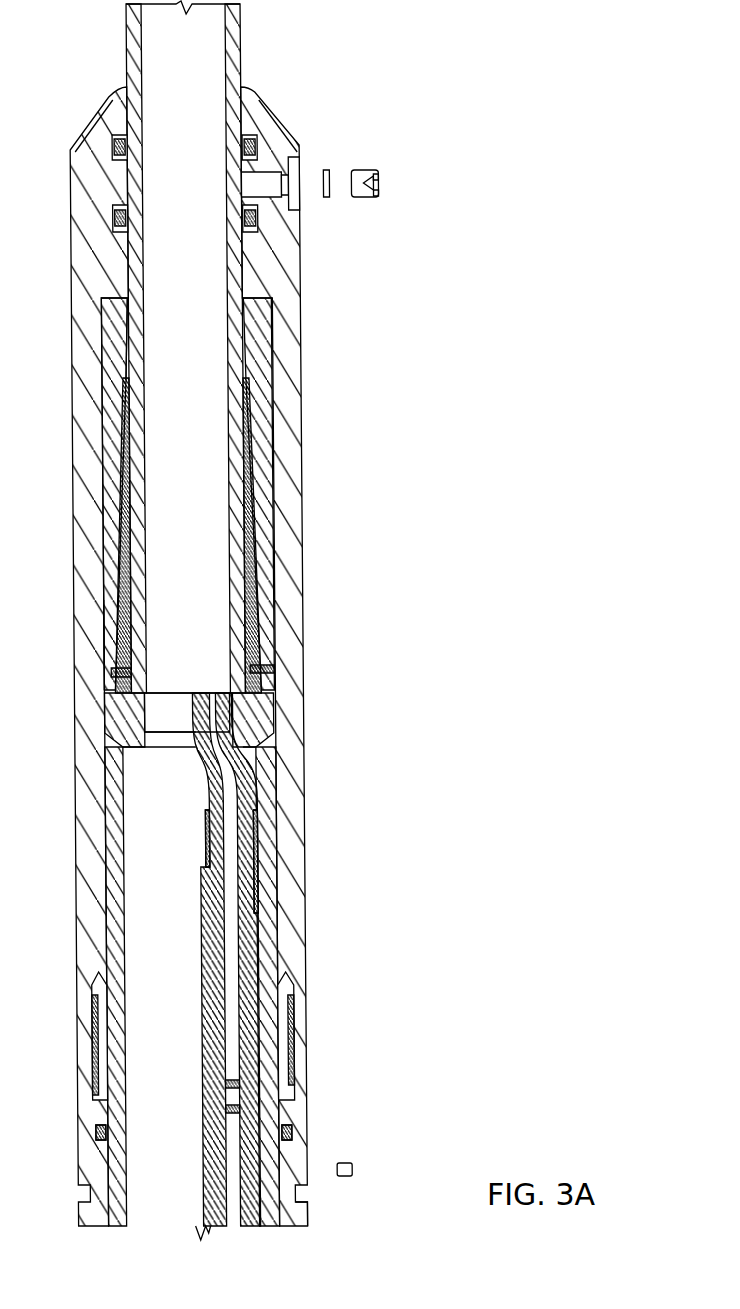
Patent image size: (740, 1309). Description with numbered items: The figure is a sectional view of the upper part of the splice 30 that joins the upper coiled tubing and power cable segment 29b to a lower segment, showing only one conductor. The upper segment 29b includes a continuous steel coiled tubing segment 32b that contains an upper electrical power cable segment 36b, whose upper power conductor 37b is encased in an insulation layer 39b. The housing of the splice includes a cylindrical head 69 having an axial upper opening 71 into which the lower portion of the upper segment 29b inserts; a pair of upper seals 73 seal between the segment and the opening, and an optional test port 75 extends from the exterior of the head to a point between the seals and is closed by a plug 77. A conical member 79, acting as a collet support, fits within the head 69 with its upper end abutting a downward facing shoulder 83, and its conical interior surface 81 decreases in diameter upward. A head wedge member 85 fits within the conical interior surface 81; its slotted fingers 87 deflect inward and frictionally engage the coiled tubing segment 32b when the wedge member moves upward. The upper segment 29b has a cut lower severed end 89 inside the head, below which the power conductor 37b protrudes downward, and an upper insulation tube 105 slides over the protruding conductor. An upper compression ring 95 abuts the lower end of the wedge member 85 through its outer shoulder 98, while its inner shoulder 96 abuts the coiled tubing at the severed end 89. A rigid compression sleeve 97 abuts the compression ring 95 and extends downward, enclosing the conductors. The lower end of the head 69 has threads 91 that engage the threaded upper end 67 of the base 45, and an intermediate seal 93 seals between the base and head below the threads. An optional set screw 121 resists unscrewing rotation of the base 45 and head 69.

The upper coiled tubing segment 32b is at (130, 33).
The upper electrical power cable segment 36b is at (210, 22).
The upper coiled tubing and power cable segment 29b is at (246, 70).
The upper opening 71 is at (130, 88).
The upper seals 73 is at (115, 226).
The test port 75 is at (252, 183).
The plug 77 is at (360, 200).
The conical member 79 is at (267, 330).
The head 69 is at (297, 377).
The downward facing shoulder 83 is at (98, 305).
The conical interior surface 81 is at (123, 358).
The fingers 87 is at (262, 547).
The inner shoulder 96 is at (103, 633).
The outer shoulder 98 is at (107, 675).
The lower severed end 89 is at (250, 675).
The head wedge member 85 is at (263, 688).
The splice 30 is at (332, 753).
The upper compression ring 95 is at (103, 750).
The compression sleeve 97 is at (110, 800).
The upper power conductor 37b is at (228, 803).
The insulation layer 39b is at (207, 795).
The upper insulation tube 105 is at (268, 953).
The threads 91 is at (93, 1050).
The threaded upper end 67 is at (288, 1062).
The intermediate seal 93 is at (92, 1138).
The set screw 121 is at (338, 1163).
The base 45 is at (305, 1217).